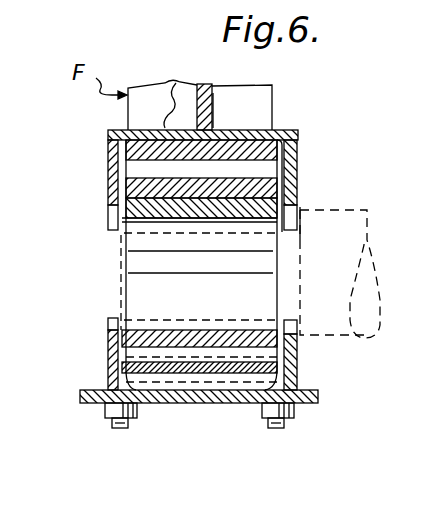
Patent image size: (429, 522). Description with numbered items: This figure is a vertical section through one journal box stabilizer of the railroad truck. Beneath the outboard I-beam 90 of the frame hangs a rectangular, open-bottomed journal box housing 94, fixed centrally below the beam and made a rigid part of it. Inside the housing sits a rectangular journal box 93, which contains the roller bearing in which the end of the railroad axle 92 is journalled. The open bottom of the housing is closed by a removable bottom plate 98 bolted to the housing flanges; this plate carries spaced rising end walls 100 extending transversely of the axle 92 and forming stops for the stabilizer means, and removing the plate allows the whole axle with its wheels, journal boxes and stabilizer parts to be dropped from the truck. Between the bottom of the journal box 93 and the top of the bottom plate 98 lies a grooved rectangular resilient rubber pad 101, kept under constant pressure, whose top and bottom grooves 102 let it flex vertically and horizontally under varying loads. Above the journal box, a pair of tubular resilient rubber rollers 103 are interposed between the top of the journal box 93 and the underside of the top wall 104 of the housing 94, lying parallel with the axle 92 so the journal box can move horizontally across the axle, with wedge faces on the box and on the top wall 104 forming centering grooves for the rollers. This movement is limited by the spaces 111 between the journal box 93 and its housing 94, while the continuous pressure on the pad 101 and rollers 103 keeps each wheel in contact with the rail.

The I-beam 90 is at (213, 93).
The railroad axle 92 is at (343, 207).
The journal box 93 is at (187, 267).
The journal box housing 94 is at (178, 72).
The bottom plate 98 is at (163, 404).
The rising end wall 100 is at (106, 350).
The resilient rubber pad 101 is at (224, 380).
The grooves 102 is at (253, 365).
The tubular resilient rubber roller 103 is at (110, 134).
The top wall 104 is at (287, 146).
The spaces 111 is at (108, 215).